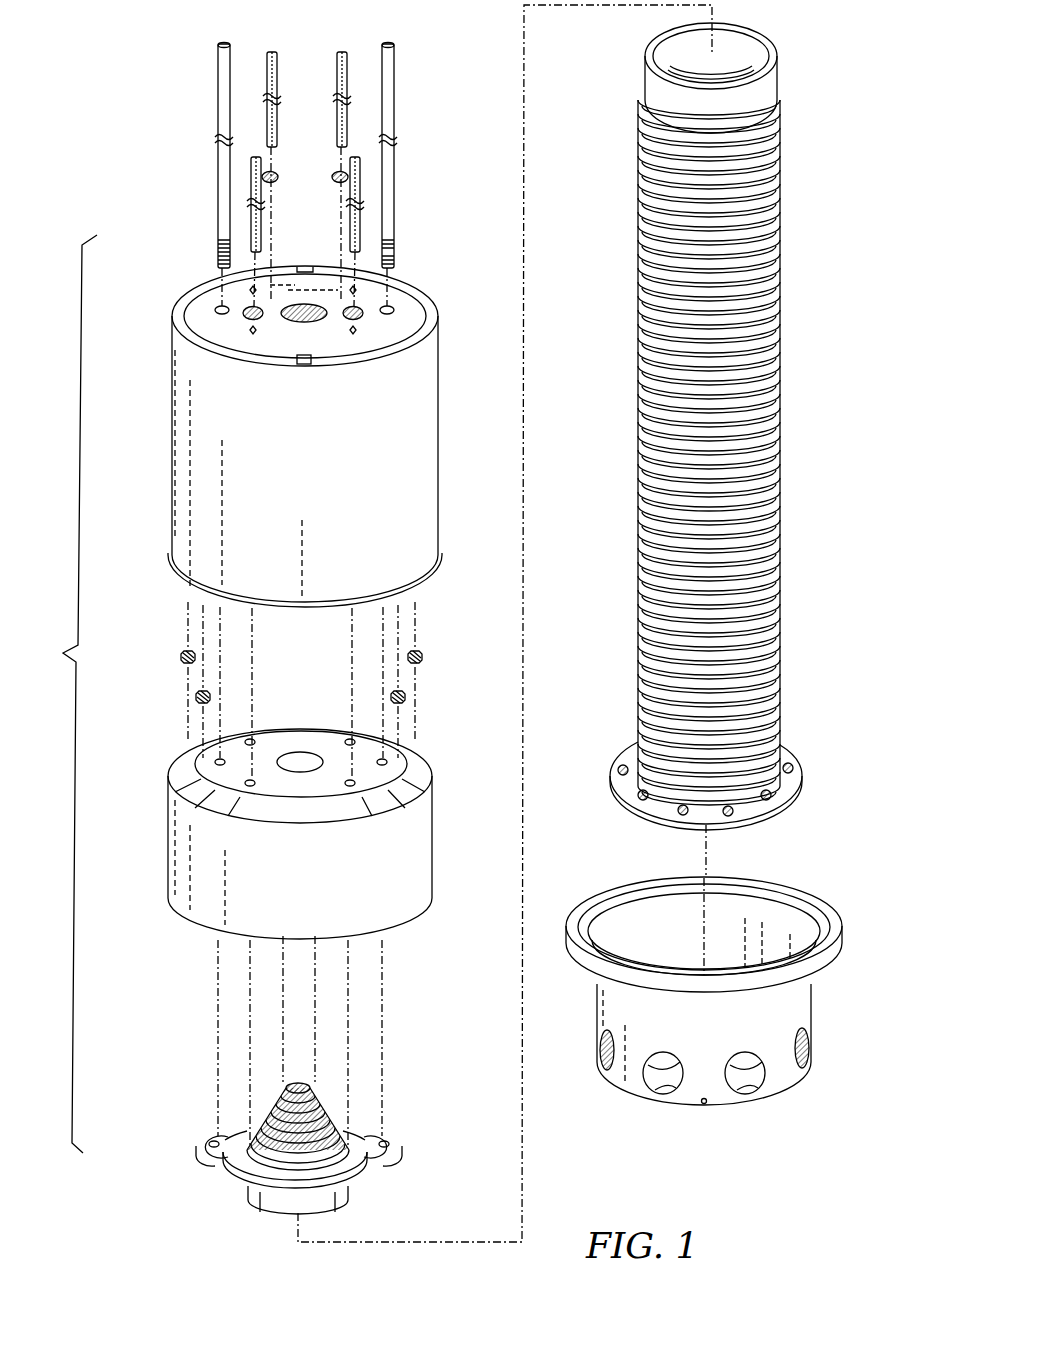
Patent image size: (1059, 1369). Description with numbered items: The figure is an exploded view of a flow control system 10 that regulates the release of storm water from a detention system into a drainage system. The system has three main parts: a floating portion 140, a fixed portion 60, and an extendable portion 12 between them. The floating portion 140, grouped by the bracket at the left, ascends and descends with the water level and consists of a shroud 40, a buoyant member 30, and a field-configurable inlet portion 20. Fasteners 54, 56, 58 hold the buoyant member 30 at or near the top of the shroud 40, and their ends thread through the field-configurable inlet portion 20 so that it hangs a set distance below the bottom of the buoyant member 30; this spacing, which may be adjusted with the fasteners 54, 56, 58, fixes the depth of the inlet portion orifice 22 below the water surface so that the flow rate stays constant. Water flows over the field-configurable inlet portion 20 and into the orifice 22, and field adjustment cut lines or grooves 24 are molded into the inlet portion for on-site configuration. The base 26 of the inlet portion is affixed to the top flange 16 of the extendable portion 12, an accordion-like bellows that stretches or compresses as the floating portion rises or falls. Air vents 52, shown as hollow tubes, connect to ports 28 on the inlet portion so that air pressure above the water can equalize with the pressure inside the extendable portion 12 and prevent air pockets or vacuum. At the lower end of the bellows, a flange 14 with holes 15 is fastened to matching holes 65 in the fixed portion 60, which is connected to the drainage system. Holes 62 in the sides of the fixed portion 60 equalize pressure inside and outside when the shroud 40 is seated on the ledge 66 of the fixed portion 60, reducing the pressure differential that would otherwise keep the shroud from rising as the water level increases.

The flow control system 10 is at (769, 1176).
The extendable portion 12 is at (735, 426).
The flange 14 is at (735, 775).
The holes 15 is at (793, 768).
The top flange 16 is at (772, 80).
The field-configurable inlet portion 20 is at (280, 1144).
The field-configurable inlet portion orifice 22 is at (305, 1080).
The field adjustment cut lines or grooves 24 is at (330, 1130).
The base 26 is at (340, 1198).
The ports 28 is at (208, 1138).
The buoyant member 30 is at (422, 848).
The shroud 40 is at (438, 447).
The air vents 52 is at (218, 86).
The fasteners 54 is at (278, 78).
The fasteners 56 is at (335, 172).
The fasteners 58 is at (181, 660).
The fixed portion 60 is at (710, 995).
The holes 62 is at (600, 1056).
The holes 65 is at (647, 1082).
The ledge 66 is at (815, 925).
The floating portion 140 is at (63, 694).